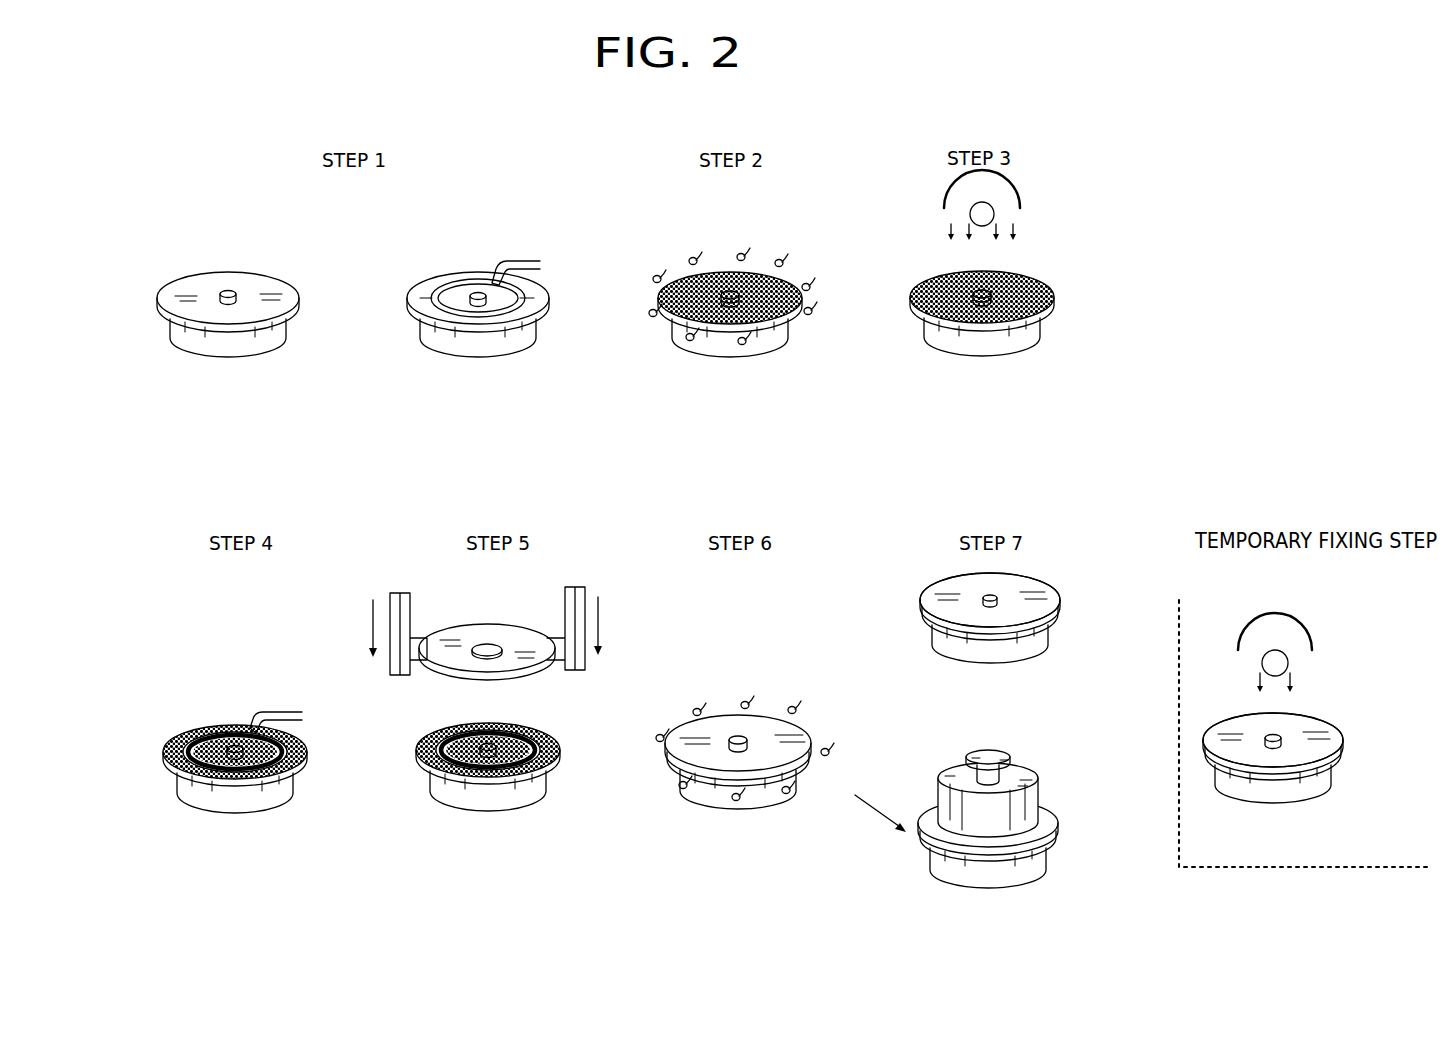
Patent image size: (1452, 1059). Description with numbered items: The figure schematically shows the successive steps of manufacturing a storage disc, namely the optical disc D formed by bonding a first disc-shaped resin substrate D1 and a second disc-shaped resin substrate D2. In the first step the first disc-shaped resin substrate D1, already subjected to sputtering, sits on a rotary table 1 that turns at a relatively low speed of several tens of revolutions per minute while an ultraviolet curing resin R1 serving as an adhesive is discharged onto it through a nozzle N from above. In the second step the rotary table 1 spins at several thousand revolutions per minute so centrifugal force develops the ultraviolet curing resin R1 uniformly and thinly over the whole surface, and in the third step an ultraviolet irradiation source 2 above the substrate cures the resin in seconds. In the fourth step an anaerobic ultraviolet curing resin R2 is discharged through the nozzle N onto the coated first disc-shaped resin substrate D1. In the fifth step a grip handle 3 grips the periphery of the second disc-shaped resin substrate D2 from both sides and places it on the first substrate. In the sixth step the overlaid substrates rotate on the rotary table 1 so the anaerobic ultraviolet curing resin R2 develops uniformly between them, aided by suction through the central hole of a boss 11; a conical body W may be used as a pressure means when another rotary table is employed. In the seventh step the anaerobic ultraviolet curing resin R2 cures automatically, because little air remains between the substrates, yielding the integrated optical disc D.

The rotary table 1 is at (240, 346).
The boss 11 is at (222, 290).
The first disc-shaped resin substrate D1 is at (277, 283).
The second disc-shaped resin substrate D2 is at (498, 626).
The optical disc D is at (1060, 589).
The ultraviolet curing resin R1 is at (445, 282).
The anaerobic ultraviolet curing resin R2 is at (222, 720).
The nozzle N is at (513, 262).
The ultraviolet lamp 2 is at (1020, 213).
The grip handle 3 is at (578, 596).
The conical body W is at (1025, 777).